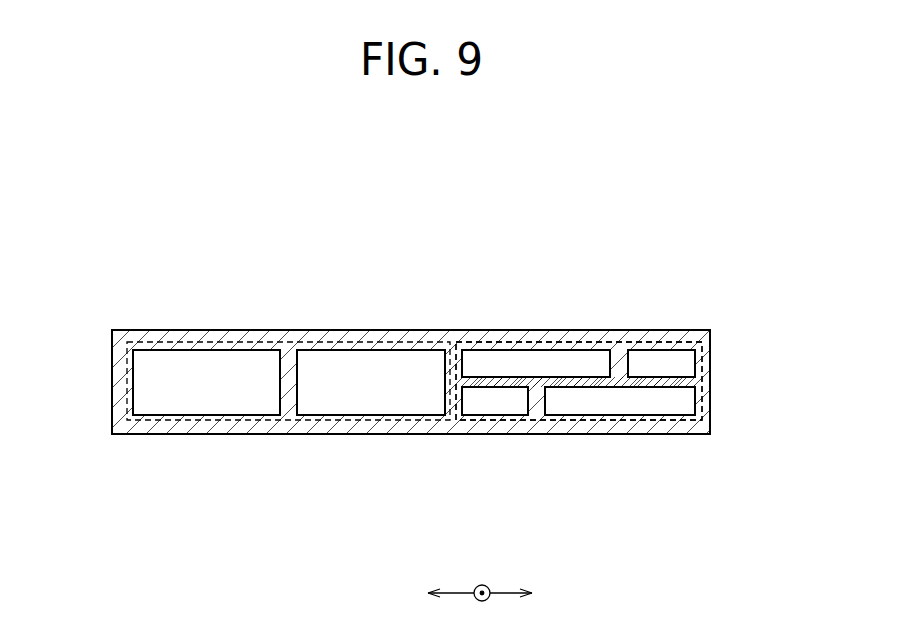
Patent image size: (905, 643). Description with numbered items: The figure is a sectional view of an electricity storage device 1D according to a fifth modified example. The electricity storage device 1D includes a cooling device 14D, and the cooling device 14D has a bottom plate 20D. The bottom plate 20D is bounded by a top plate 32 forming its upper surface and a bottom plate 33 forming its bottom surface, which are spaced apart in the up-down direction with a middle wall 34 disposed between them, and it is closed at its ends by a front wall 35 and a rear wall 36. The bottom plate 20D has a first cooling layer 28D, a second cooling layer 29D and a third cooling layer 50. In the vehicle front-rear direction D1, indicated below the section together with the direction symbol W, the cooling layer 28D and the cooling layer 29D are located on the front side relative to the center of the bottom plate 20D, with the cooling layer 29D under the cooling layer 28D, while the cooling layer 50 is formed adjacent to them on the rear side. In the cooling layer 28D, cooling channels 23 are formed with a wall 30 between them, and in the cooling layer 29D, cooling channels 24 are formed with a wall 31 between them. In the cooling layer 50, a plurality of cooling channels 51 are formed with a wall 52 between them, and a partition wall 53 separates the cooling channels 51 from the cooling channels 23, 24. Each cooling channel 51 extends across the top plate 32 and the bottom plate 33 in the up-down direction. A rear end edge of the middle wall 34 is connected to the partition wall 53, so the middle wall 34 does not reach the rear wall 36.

The electricity storage device 1D is at (527, 218).
The cooling device 14D is at (579, 381).
The bottom plate 20D is at (342, 225).
The cooling channel 23 is at (527, 365).
The cooling channel 24 is at (492, 402).
The first cooling layer 28D is at (702, 369).
The second cooling layer 29D is at (702, 403).
The wall 30 is at (619, 372).
The wall 31 is at (537, 398).
The top plate 32 is at (503, 342).
The bottom plate 33 is at (393, 425).
The middle wall 34 is at (652, 405).
The front wall 35 is at (701, 351).
The rear wall 36 is at (111, 357).
The third cooling layer 50 is at (118, 372).
The cooling channel 51 is at (196, 365).
The wall 52 is at (289, 360).
The partition wall 53 is at (455, 355).
The vehicle front-rear direction D1 is at (495, 595).
The width direction W is at (492, 603).